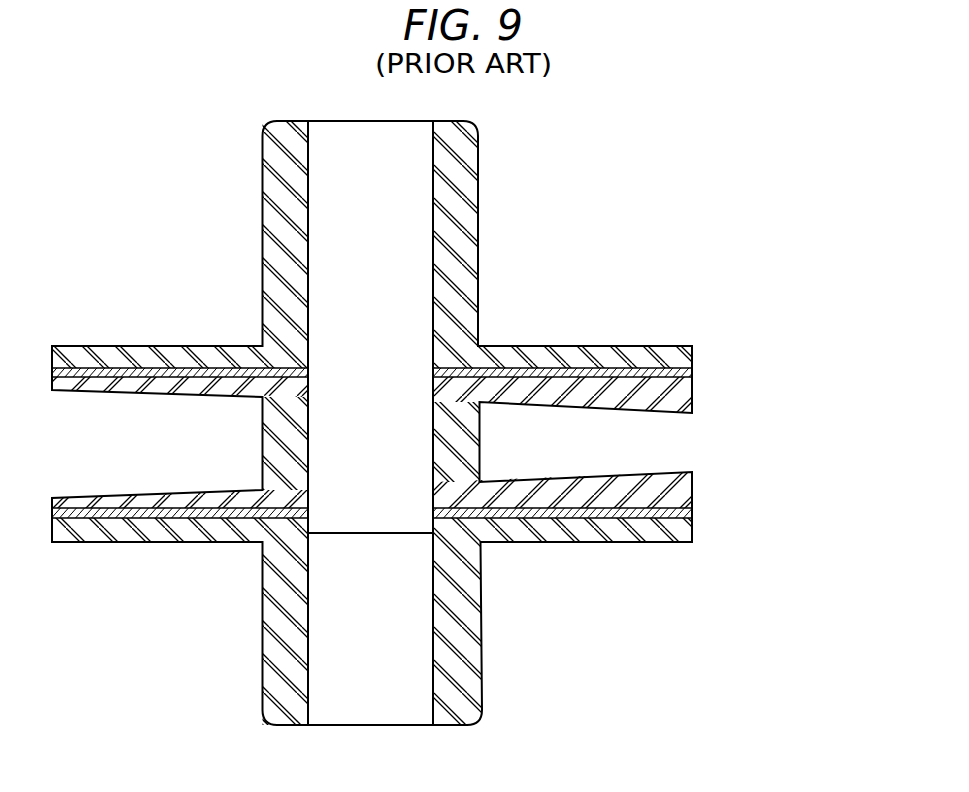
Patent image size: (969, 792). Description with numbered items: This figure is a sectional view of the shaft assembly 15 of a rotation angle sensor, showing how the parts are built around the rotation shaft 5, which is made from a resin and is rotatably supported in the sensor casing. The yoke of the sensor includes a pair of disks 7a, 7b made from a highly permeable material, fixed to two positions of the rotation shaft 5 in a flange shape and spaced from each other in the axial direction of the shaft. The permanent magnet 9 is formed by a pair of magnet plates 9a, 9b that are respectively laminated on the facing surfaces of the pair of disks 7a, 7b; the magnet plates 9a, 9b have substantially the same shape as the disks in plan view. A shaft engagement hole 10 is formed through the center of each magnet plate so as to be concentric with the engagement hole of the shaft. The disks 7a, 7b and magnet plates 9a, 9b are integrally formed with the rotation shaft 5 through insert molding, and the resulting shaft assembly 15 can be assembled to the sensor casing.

The rotation shaft 5 is at (463, 212).
The shaft assembly 15 is at (191, 337).
The disk 7a is at (593, 370).
The disk 7b is at (607, 517).
The permanent magnet 9 is at (653, 444).
The magnet plate 9a is at (673, 398).
The magnet plate 9b is at (684, 481).
The shaft engagement hole 10 is at (436, 393).